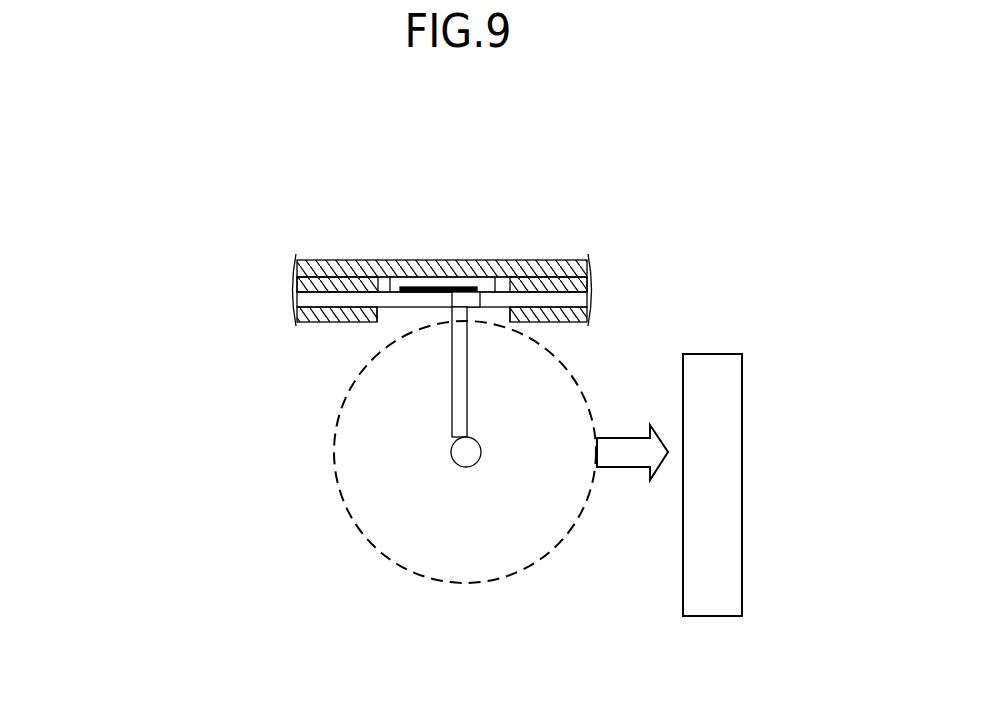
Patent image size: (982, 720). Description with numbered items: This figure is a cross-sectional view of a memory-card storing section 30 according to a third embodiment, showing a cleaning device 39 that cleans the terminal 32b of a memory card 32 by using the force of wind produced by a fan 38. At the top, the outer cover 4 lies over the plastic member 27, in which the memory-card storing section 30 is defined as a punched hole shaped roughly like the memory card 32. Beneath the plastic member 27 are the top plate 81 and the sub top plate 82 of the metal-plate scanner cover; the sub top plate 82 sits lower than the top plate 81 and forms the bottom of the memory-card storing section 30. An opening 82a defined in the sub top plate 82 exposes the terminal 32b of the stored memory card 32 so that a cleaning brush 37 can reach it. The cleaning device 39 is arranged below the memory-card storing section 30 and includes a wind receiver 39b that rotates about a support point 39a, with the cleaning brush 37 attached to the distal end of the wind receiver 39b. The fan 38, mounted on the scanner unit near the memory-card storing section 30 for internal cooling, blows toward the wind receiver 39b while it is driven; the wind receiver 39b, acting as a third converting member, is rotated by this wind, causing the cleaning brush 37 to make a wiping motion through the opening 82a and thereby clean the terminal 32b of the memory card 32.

The outer cover 4 is at (398, 265).
The plastic member 27 is at (572, 270).
The memory-card storing section 30 is at (373, 268).
The memory card 32 is at (449, 271).
The terminal 32b is at (426, 287).
The cleaning brush 37 is at (482, 310).
The fan 38 is at (668, 512).
The cleaning device 39 is at (350, 528).
The support point 39a is at (465, 467).
The wind receiver 39b is at (450, 415).
The top plate 81 is at (295, 300).
The sub top plate 82 is at (335, 313).
The opening 82a is at (408, 310).